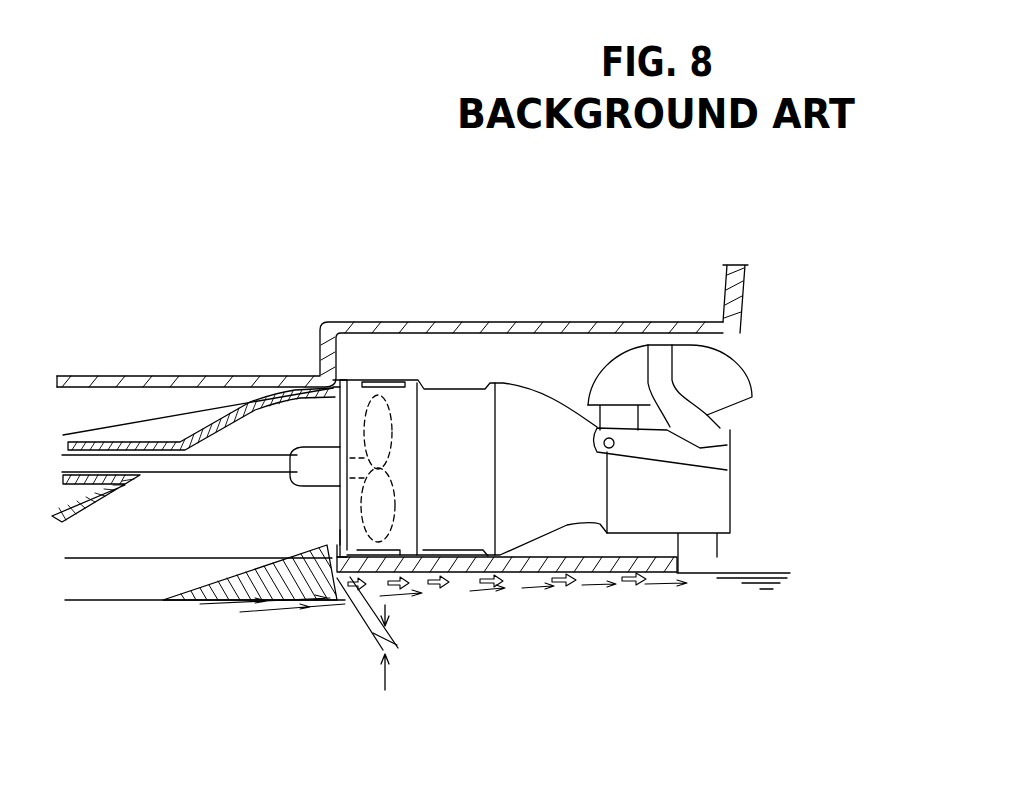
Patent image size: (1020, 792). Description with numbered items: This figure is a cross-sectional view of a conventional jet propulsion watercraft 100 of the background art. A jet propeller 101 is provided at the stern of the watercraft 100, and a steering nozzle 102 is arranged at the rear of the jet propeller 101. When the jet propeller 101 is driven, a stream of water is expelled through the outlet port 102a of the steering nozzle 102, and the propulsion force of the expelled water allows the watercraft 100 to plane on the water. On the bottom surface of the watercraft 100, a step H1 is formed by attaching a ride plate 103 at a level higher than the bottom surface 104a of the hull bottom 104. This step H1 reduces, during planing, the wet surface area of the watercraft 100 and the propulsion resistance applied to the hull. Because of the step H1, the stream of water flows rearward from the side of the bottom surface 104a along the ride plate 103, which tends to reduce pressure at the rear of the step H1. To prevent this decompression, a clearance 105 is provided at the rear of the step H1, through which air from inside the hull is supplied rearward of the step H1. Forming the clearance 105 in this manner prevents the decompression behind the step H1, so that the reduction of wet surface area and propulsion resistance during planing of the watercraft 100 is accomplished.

The jet propulsion watercraft 100 is at (157, 290).
The jet propeller 101 is at (378, 378).
The steering nozzle 102 is at (703, 512).
The outlet port 102a is at (732, 487).
The ride plate 103 is at (510, 572).
The hull bottom 104 is at (210, 604).
The bottom surface 104a is at (283, 602).
The clearance 105 is at (340, 530).
The step H1 is at (387, 662).